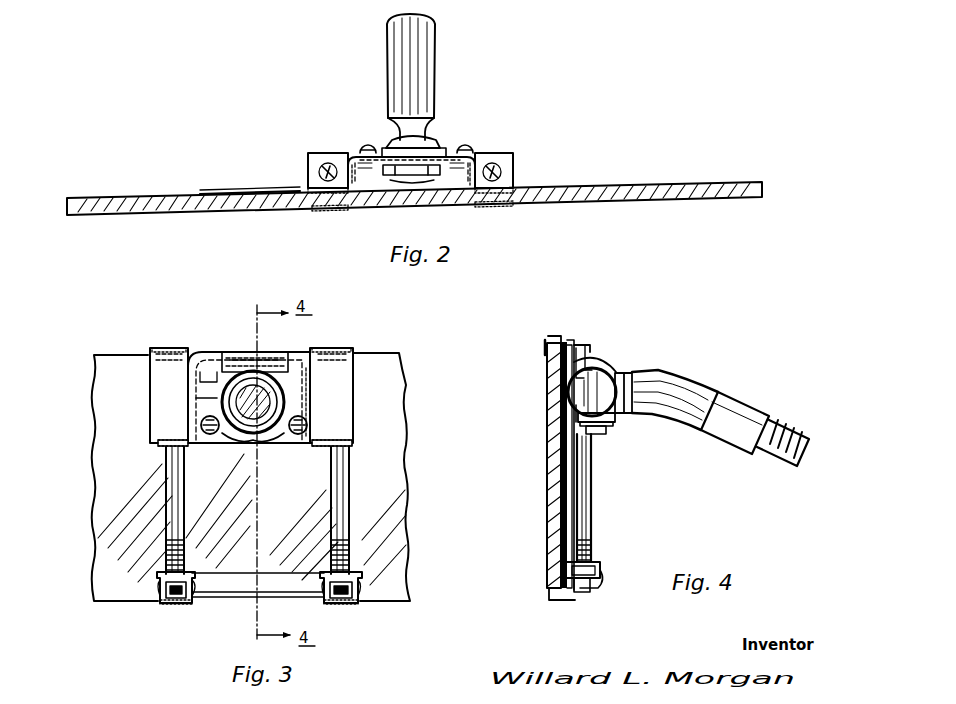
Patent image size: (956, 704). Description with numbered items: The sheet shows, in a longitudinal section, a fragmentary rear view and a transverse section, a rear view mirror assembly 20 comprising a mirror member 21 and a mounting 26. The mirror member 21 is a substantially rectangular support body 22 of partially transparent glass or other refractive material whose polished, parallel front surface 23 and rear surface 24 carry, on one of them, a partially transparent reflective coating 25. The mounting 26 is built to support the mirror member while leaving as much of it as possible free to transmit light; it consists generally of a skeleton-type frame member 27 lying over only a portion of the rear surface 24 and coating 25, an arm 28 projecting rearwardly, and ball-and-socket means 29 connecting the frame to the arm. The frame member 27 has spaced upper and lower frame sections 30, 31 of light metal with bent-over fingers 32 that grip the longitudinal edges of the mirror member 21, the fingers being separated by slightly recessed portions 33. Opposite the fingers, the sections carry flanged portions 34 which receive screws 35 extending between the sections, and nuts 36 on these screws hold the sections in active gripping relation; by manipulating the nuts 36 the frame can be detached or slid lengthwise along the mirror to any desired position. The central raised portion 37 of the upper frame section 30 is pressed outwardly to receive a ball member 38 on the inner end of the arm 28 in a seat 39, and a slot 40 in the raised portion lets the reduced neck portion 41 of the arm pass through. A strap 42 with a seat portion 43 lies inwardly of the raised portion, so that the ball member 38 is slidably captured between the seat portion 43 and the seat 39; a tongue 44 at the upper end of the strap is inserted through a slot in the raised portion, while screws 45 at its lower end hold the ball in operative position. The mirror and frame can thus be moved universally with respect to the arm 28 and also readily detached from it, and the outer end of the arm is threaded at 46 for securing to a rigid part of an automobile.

In FIG. 2, the rear view mirror assembly 20 is at (243, 136).
In FIG. 3, the rear view mirror assembly 20 is at (123, 349).
In FIG. 4, the rear view mirror assembly 20 is at (540, 389).
In FIG. 2, the mirror member 21 is at (185, 193).
In FIG. 3, the mirror member 21 is at (382, 386).
In FIG. 4, the mirror member 21 is at (546, 405).
In FIG. 2, the support body 22 is at (212, 214).
In FIG. 3, the support body 22 is at (93, 500).
In FIG. 4, the support body 22 is at (555, 423).
In FIG. 2, the front surface 23 is at (655, 197).
In FIG. 4, the front surface 23 is at (550, 540).
In FIG. 2, the rear surface 24 is at (227, 192).
In FIG. 4, the rear surface 24 is at (572, 520).
In FIG. 2, the reflective coating 25 is at (260, 189).
In FIG. 3, the reflective coating 25 is at (100, 453).
In FIG. 4, the reflective coating 25 is at (590, 487).
In FIG. 2, the mounting 26 is at (375, 104).
In FIG. 3, the mounting 26 is at (147, 392).
In FIG. 4, the mounting 26 is at (706, 375).
In FIG. 2, the frame member 27 is at (483, 151).
In FIG. 3, the frame member 27 is at (360, 394).
In FIG. 4, the frame member 27 is at (600, 341).
In FIG. 2, the arm 28 is at (410, 75).
In FIG. 3, the arm 28 is at (270, 408).
In FIG. 4, the arm 28 is at (712, 420).
In FIG. 2, the ball-and-socket means 29 is at (446, 148).
In FIG. 3, the ball-and-socket means 29 is at (195, 399).
In FIG. 4, the ball-and-socket means 29 is at (618, 424).
In FIG. 2, the upper frame section 30 is at (516, 175).
In FIG. 3, the upper frame section 30 is at (358, 364).
In FIG. 4, the upper frame section 30 is at (582, 344).
In FIG. 4, the lower frame section 31 is at (584, 593).
In FIG. 2, the bent-over fingers 32 is at (318, 212).
In FIG. 3, the bent-over fingers 32 is at (165, 348).
In FIG. 4, the bent-over fingers 32 is at (552, 340).
In FIG. 3, the recessed portions 33 is at (285, 357).
In FIG. 4, the recessed portions 33 is at (569, 342).
In FIG. 2, the flanged portions 34 is at (312, 155).
In FIG. 3, the flanged portions 34 is at (158, 441).
In FIG. 4, the flanged portions 34 is at (600, 562).
In FIG. 2, the screws 35 is at (320, 170).
In FIG. 3, the screws 35 is at (168, 556).
In FIG. 4, the screws 35 is at (592, 505).
In FIG. 3, the nuts 36 is at (160, 601).
In FIG. 4, the nuts 36 is at (602, 576).
In FIG. 2, the raised central portion 37 is at (345, 157).
In FIG. 3, the raised central portion 37 is at (212, 382).
In FIG. 3, the ball member 38 is at (290, 385).
In FIG. 4, the ball member 38 is at (612, 385).
In FIG. 4, the seat 39 is at (598, 380).
In FIG. 3, the slot 40 is at (250, 428).
In FIG. 4, the slot 40 is at (606, 434).
In FIG. 2, the reduced neck portion 41 is at (432, 140).
In FIG. 3, the reduced neck portion 41 is at (286, 395).
In FIG. 4, the reduced neck portion 41 is at (650, 385).
In FIG. 2, the strap 42 is at (393, 177).
In FIG. 3, the strap 42 is at (268, 352).
In FIG. 4, the strap 42 is at (583, 418).
In FIG. 4, the seat portion 43 is at (548, 358).
In FIG. 2, the tongue 44 is at (430, 172).
In FIG. 3, the tongue 44 is at (239, 356).
In FIG. 4, the tongue 44 is at (590, 352).
In FIG. 2, the screws 45 is at (368, 146).
In FIG. 3, the screws 45 is at (192, 426).
In FIG. 4, the screws 45 is at (616, 415).
In FIG. 4, the threaded end 46 is at (782, 427).